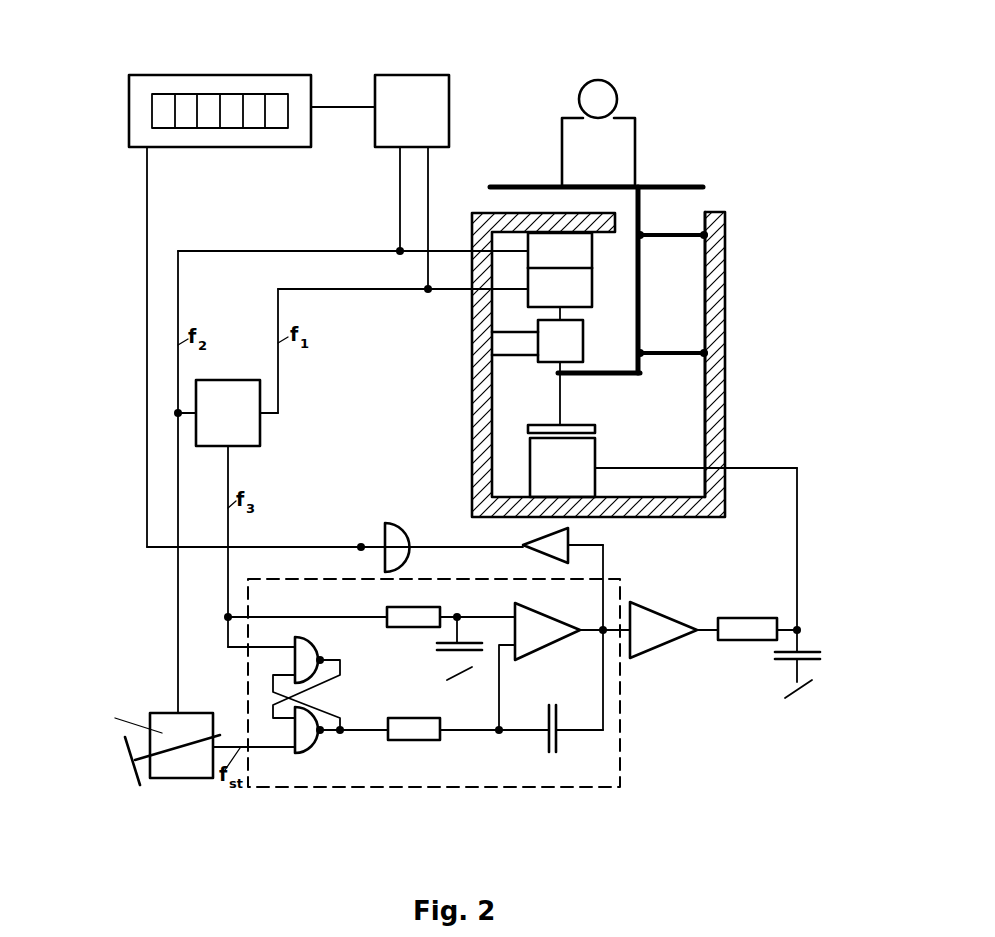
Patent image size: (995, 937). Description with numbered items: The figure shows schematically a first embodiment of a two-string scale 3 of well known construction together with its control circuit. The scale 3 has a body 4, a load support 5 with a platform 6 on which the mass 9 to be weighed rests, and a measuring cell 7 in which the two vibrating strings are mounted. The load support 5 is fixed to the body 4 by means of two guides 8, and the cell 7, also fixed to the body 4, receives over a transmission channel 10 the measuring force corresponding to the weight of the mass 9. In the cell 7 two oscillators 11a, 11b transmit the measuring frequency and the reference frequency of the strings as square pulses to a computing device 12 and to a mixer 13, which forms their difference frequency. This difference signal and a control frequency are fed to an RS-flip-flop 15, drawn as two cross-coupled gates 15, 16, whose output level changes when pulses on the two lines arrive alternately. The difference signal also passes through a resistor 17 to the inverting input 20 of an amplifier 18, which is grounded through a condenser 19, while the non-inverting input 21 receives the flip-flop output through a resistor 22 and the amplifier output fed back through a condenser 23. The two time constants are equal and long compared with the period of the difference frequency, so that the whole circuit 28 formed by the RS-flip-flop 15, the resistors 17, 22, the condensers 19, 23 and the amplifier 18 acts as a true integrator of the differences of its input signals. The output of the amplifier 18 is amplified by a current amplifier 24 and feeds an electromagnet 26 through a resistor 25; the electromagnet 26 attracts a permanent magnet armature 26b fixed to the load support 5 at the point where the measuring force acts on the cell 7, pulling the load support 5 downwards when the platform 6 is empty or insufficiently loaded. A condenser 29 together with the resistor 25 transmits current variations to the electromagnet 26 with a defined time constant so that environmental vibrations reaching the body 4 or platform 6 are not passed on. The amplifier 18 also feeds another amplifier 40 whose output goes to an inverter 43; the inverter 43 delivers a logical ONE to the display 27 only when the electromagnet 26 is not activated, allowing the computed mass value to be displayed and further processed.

The display 27 is at (217, 83).
The computing device 12 is at (408, 82).
The mass 9 is at (602, 96).
The platform 6 is at (662, 183).
The load support 5 is at (643, 293).
The guides 8 is at (680, 238).
The scale 3 is at (678, 438).
The body 4 is at (718, 315).
The oscillator 11b is at (585, 251).
The measuring cell 7 is at (592, 268).
The oscillator 11a is at (585, 291).
The transmission channel 10 is at (573, 352).
The permanent magnet armature 26b is at (575, 426).
The electromagnet 26 is at (562, 462).
The mixer 13 is at (205, 433).
The inverter 43 is at (378, 540).
The amplifier 40 is at (555, 540).
The circuit 28 is at (472, 705).
The RS-flip-flop 15 is at (307, 693).
The gate 16 is at (340, 733).
The resistor 17 is at (395, 620).
The condenser 19 is at (458, 652).
The amplifier 18 is at (545, 635).
The inverting input 20 is at (513, 605).
The non-inverting input 21 is at (513, 652).
The resistor 22 is at (407, 733).
The condenser 23 is at (550, 757).
The current amplifier 24 is at (650, 630).
The resistor 25 is at (740, 638).
The condenser 29 is at (803, 650).